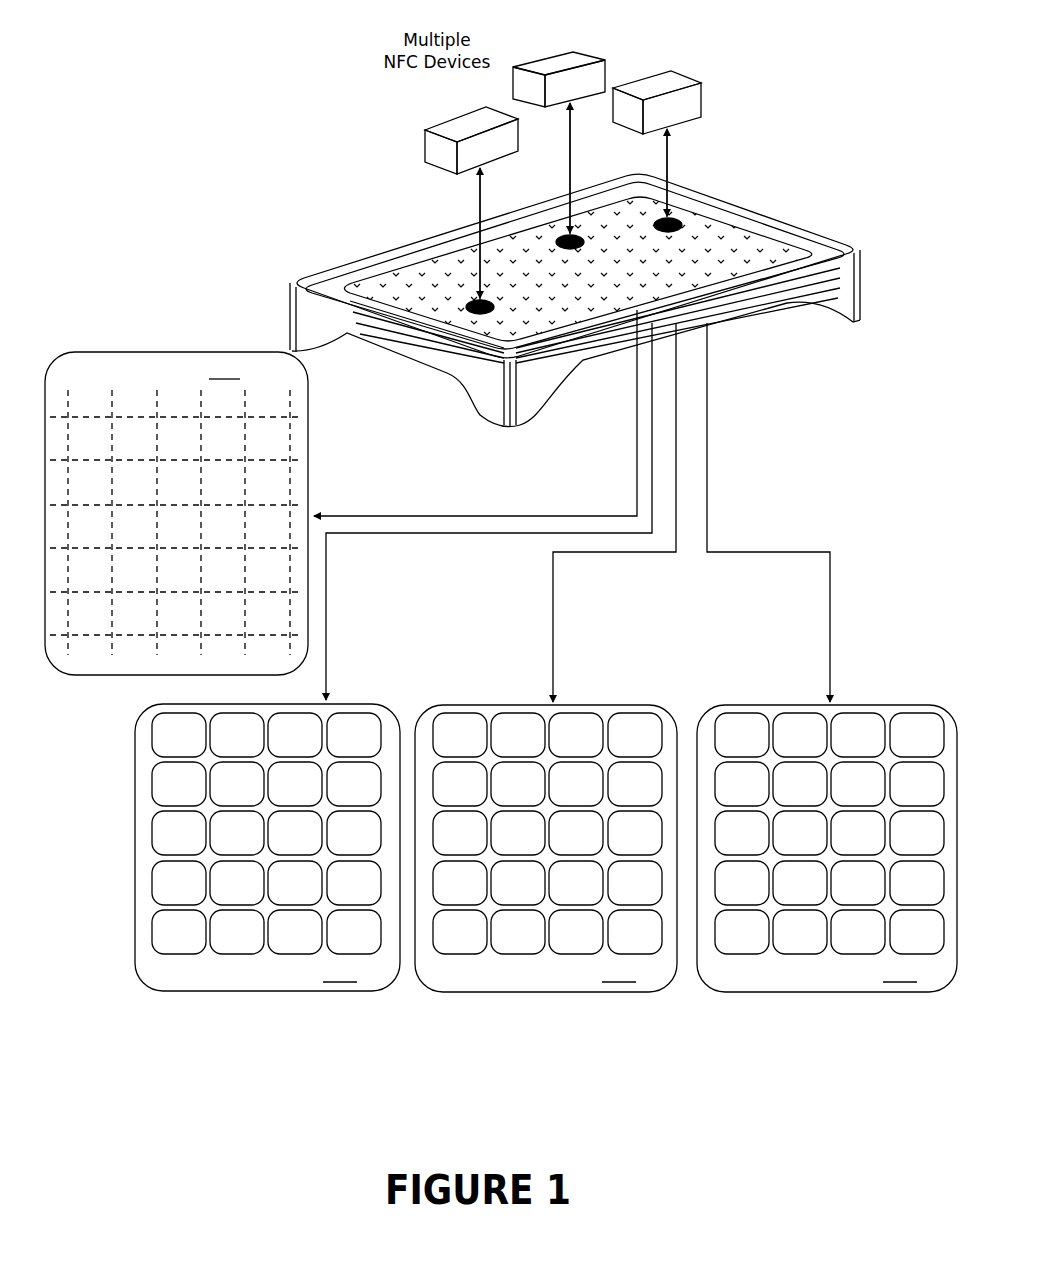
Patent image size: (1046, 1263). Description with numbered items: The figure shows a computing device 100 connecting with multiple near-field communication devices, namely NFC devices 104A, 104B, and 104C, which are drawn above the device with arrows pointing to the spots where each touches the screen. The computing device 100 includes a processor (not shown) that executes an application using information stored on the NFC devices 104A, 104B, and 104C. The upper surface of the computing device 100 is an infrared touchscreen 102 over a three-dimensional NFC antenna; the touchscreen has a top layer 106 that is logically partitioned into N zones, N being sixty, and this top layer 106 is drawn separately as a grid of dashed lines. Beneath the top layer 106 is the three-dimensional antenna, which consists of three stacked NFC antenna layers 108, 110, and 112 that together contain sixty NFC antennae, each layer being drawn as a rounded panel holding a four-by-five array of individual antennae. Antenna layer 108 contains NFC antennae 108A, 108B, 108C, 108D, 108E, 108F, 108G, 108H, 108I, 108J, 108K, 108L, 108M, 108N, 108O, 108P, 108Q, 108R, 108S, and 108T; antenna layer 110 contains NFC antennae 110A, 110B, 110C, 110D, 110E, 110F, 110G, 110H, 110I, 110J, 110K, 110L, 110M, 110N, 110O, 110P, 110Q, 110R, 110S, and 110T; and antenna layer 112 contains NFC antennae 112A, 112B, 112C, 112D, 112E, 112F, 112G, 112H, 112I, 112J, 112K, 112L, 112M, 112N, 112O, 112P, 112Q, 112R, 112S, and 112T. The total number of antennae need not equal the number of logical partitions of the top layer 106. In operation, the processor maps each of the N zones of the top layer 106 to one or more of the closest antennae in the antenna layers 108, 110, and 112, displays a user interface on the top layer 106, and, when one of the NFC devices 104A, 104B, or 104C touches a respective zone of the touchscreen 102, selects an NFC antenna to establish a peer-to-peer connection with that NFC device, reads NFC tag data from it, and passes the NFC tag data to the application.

The computing device 100 is at (387, 251).
The IR touchscreen over 3D NFC antennae 102 is at (767, 237).
The near-field communication device 104A is at (425, 146).
The near-field communication device 104B is at (588, 51).
The near-field communication device 104C is at (698, 81).
The top layer 106 is at (330, 276).
The NFC antenna layer 108 is at (825, 262).
The NFC antenna layer 110 is at (858, 270).
The NFC antenna layer 112 is at (865, 292).
The NFC antenna 108A is at (200, 748).
The NFC antenna 108B is at (258, 748).
The NFC antenna 108C is at (316, 748).
The NFC antenna 108D is at (375, 748).
The NFC antenna 108E is at (200, 797).
The NFC antenna 108F is at (258, 797).
The NFC antenna 108G is at (316, 797).
The NFC antenna 108H is at (375, 797).
The NFC antenna 108I is at (200, 846).
The NFC antenna 108J is at (258, 846).
The NFC antenna 108K is at (316, 846).
The NFC antenna 108L is at (375, 846).
The NFC antenna 108M is at (200, 896).
The NFC antenna 108N is at (258, 896).
The NFC antenna 108O is at (316, 896).
The NFC antenna 108P is at (375, 896).
The NFC antenna 108Q is at (200, 945).
The NFC antenna 108R is at (258, 945).
The NFC antenna 108S is at (316, 945).
The NFC antenna 108T is at (375, 945).
The NFC antenna 110A is at (481, 748).
The NFC antenna 110B is at (539, 748).
The NFC antenna 110C is at (597, 748).
The NFC antenna 110D is at (656, 748).
The NFC antenna 110E is at (481, 797).
The NFC antenna 110F is at (539, 797).
The NFC antenna 110G is at (597, 797).
The NFC antenna 110H is at (656, 797).
The NFC antenna 110I is at (481, 846).
The NFC antenna 110J is at (539, 846).
The NFC antenna 110K is at (597, 846).
The NFC antenna 110L is at (656, 846).
The NFC antenna 110M is at (481, 896).
The NFC antenna 110N is at (539, 896).
The NFC antenna 110O is at (597, 896).
The NFC antenna 110P is at (656, 896).
The NFC antenna 110Q is at (481, 945).
The NFC antenna 110R is at (539, 945).
The NFC antenna 110S is at (597, 945).
The NFC antenna 110T is at (656, 945).
The NFC antenna 112A is at (763, 748).
The NFC antenna 112B is at (821, 748).
The NFC antenna 112C is at (879, 748).
The NFC antenna 112D is at (938, 748).
The NFC antenna 112E is at (763, 797).
The NFC antenna 112F is at (821, 797).
The NFC antenna 112G is at (879, 797).
The NFC antenna 112H is at (938, 797).
The NFC antenna 112I is at (763, 846).
The NFC antenna 112J is at (821, 846).
The NFC antenna 112K is at (879, 846).
The NFC antenna 112L is at (938, 846).
The NFC antenna 112M is at (763, 896).
The NFC antenna 112N is at (821, 896).
The NFC antenna 112O is at (879, 896).
The NFC antenna 112P is at (938, 896).
The NFC antenna 112Q is at (763, 945).
The NFC antenna 112R is at (821, 945).
The NFC antenna 112S is at (879, 945).
The NFC antenna 112T is at (938, 945).